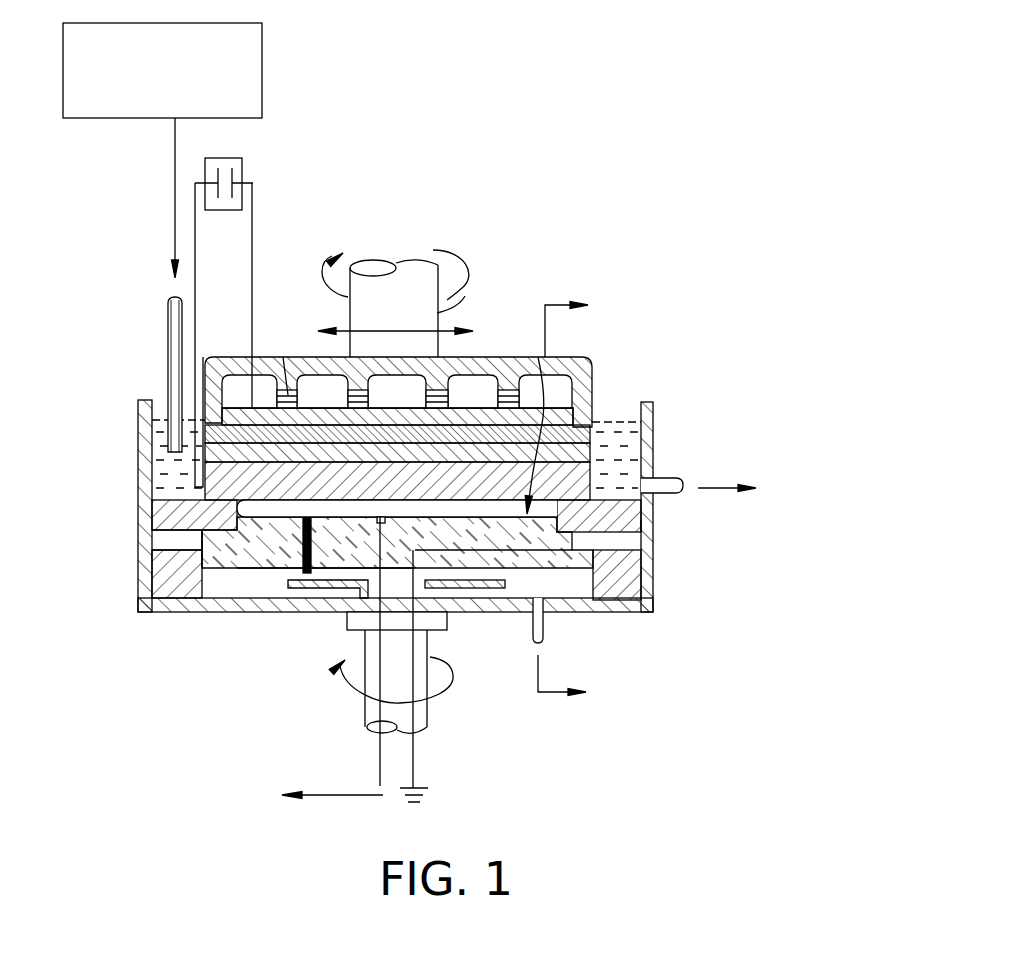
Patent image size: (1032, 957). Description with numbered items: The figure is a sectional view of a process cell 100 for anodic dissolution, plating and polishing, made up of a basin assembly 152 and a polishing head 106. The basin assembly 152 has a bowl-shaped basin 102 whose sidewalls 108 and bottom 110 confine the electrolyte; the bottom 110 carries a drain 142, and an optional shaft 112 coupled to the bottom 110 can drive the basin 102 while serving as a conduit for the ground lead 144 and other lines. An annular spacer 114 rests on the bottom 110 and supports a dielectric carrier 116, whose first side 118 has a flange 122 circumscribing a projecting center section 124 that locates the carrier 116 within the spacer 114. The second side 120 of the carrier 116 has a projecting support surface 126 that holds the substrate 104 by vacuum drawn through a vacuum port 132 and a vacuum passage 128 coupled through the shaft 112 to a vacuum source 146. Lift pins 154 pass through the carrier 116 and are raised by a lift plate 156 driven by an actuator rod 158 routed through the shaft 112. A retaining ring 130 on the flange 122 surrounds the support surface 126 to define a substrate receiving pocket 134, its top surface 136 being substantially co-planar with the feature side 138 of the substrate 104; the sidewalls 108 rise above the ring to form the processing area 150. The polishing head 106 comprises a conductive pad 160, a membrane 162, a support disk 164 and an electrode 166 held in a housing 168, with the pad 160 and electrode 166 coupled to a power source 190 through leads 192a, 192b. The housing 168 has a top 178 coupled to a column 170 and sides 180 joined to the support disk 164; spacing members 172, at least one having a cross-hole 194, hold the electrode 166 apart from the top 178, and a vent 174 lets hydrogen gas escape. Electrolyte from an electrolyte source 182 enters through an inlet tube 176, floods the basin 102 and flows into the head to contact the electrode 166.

The process cell 100 is at (676, 150).
The basin 102 is at (752, 574).
The substrate 104 is at (660, 480).
The polishing head 106 is at (505, 235).
The sidewalls 108 is at (650, 438).
The bottom 110 is at (168, 607).
The shaft 112 is at (427, 640).
The spacer 114 is at (630, 583).
The carrier 116 is at (218, 568).
The first side 118 is at (575, 570).
The second side 120 is at (641, 520).
The flange 122 is at (163, 538).
The center section 124 is at (246, 580).
The support surface 126 is at (543, 502).
The vacuum passage 128 is at (337, 518).
The retaining ring 130 is at (144, 520).
The vacuum port 132 is at (398, 486).
The substrate receiving pocket 134 is at (582, 357).
The top surface 136 is at (170, 507).
The feature side 138 is at (315, 486).
The drain 142 is at (547, 623).
The ground lead 144 is at (413, 713).
The vacuum source 146 is at (257, 692).
The processing area 150 is at (158, 414).
The basin assembly 152 is at (830, 360).
The lift pins 154 is at (303, 550).
The lift plate 156 is at (542, 700).
The actuator rod 158 is at (345, 612).
The conductive pad 160 is at (568, 482).
The membrane 162 is at (580, 453).
The support disk 164 is at (588, 468).
The electrode 166 is at (515, 357).
The housing 168 is at (316, 357).
The column 170 is at (470, 357).
The spacing members 172 is at (310, 357).
The vent 174 is at (538, 357).
The inlet tube 176 is at (168, 318).
The top 178 is at (495, 357).
The sides 180 is at (215, 356).
The electrolyte source 182 is at (162, 70).
The power source 190 is at (243, 160).
The lead 192a is at (195, 243).
The lead 192b is at (252, 218).
The cross-hole 194 is at (283, 357).